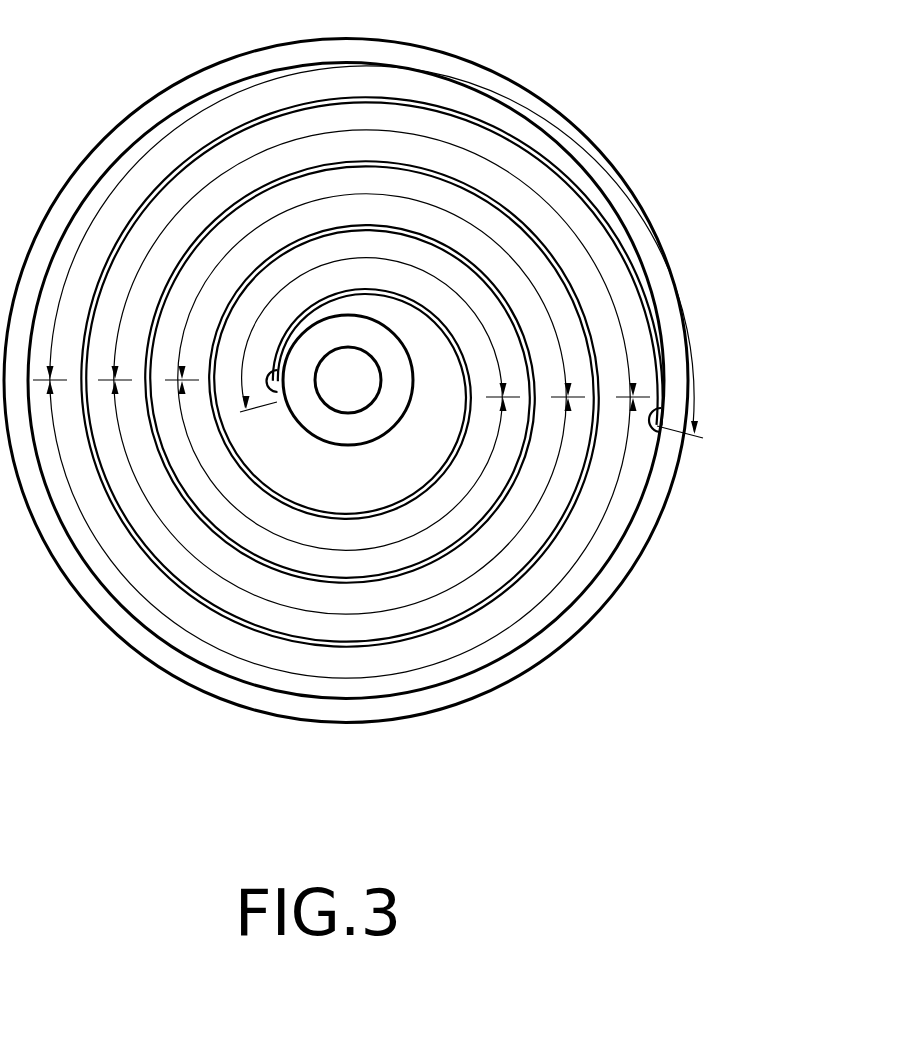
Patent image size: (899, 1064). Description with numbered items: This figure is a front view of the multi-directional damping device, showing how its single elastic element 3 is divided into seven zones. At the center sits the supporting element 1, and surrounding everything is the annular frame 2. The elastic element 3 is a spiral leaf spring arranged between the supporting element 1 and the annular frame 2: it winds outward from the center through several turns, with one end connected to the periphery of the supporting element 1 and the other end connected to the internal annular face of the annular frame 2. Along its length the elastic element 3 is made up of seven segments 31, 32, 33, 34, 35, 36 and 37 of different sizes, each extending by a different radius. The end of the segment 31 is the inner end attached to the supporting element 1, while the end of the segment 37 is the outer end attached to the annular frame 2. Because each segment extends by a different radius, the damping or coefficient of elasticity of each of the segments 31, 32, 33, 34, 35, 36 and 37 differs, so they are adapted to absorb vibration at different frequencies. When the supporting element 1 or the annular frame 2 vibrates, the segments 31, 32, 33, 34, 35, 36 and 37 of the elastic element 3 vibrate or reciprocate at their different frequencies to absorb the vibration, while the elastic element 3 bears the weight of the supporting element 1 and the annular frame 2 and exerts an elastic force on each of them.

The supporting element 1 is at (318, 423).
The annular frame 2 is at (477, 682).
The elastic element 3 is at (450, 461).
The segment 31 is at (380, 323).
The segment 32 is at (264, 460).
The segment 33 is at (458, 290).
The segment 34 is at (231, 492).
The segment 35 is at (491, 257).
The segment 36 is at (198, 525).
The segment 37 is at (517, 238).